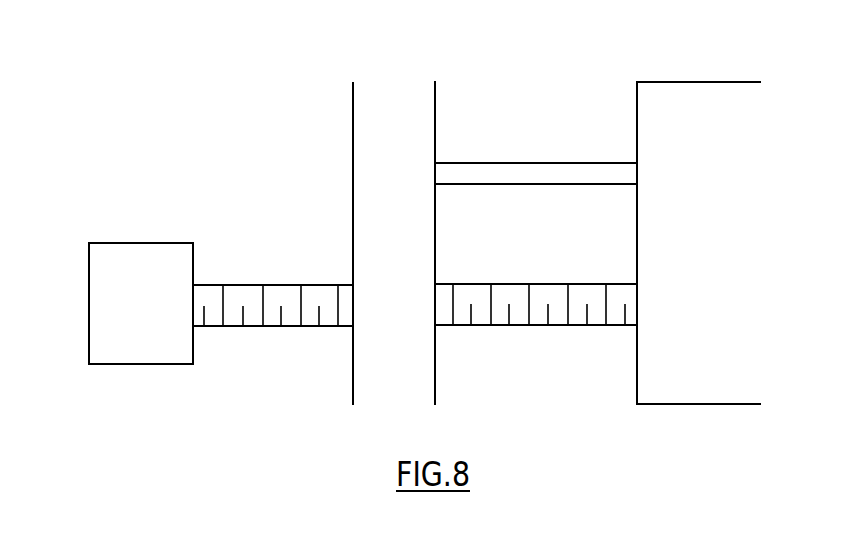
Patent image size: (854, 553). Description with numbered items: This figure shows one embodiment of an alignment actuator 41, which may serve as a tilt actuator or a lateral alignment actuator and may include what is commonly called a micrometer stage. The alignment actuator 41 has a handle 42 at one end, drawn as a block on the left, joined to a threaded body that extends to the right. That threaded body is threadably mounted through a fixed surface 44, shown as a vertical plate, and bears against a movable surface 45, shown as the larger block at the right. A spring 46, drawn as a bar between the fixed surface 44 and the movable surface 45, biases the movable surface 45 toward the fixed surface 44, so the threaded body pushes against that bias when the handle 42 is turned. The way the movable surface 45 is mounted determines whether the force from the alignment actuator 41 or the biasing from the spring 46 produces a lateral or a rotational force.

The alignment actuator 41 is at (92, 395).
The handle 42 is at (152, 243).
The fixed surface 44 is at (385, 393).
The movable surface 45 is at (670, 82).
The spring 46 is at (490, 163).